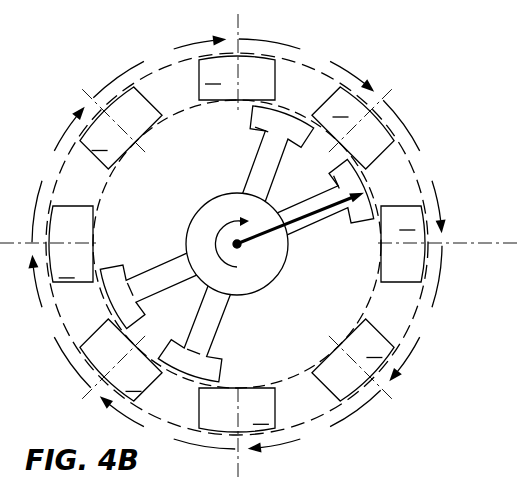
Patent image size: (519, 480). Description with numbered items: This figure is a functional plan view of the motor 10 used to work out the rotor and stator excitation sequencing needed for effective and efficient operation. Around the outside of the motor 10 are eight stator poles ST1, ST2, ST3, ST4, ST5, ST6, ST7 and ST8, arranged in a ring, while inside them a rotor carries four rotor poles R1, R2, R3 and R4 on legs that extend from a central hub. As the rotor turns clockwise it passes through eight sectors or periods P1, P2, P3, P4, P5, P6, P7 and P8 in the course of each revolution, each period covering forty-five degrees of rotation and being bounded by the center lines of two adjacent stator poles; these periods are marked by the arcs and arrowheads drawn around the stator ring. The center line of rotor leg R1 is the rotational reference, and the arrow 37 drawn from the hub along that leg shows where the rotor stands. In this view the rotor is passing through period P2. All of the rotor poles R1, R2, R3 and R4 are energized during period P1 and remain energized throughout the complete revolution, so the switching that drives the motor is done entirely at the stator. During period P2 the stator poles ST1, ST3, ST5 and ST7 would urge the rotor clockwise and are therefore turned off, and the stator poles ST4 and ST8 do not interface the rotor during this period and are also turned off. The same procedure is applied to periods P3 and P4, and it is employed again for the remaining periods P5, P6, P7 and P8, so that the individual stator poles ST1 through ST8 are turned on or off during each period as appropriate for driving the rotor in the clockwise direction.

The motor 10 is at (360, 437).
The arrow 37 is at (317, 208).
The stator pole ST1 is at (248, 56).
The stator pole ST2 is at (386, 103).
The stator pole ST3 is at (379, 254).
The stator pole ST4 is at (363, 388).
The stator pole ST5 is at (233, 430).
The stator pole ST6 is at (83, 365).
The stator pole ST7 is at (108, 235).
The stator pole ST8 is at (116, 90).
The rotor leg R1 is at (348, 222).
The rotor pole R2 is at (253, 133).
The rotor pole R3 is at (124, 266).
The rotor pole R4 is at (213, 356).
The period P1 is at (306, 65).
The period P2 is at (414, 166).
The period P3 is at (415, 313).
The period P4 is at (314, 421).
The period P5 is at (167, 422).
The period P6 is at (59, 321).
The period P7 is at (58, 174).
The period P8 is at (159, 66).